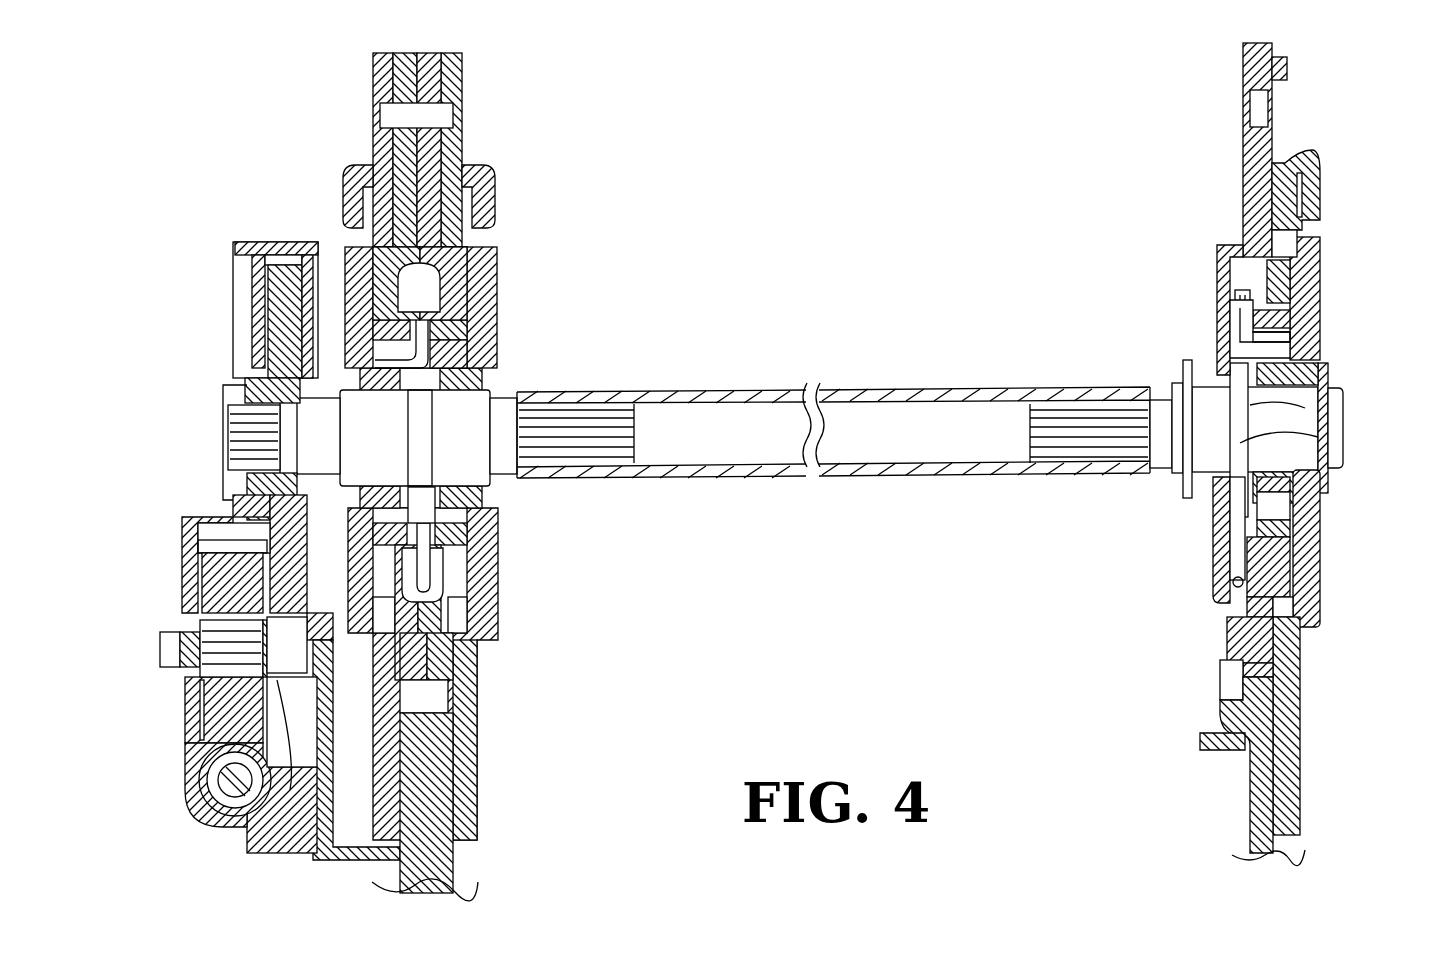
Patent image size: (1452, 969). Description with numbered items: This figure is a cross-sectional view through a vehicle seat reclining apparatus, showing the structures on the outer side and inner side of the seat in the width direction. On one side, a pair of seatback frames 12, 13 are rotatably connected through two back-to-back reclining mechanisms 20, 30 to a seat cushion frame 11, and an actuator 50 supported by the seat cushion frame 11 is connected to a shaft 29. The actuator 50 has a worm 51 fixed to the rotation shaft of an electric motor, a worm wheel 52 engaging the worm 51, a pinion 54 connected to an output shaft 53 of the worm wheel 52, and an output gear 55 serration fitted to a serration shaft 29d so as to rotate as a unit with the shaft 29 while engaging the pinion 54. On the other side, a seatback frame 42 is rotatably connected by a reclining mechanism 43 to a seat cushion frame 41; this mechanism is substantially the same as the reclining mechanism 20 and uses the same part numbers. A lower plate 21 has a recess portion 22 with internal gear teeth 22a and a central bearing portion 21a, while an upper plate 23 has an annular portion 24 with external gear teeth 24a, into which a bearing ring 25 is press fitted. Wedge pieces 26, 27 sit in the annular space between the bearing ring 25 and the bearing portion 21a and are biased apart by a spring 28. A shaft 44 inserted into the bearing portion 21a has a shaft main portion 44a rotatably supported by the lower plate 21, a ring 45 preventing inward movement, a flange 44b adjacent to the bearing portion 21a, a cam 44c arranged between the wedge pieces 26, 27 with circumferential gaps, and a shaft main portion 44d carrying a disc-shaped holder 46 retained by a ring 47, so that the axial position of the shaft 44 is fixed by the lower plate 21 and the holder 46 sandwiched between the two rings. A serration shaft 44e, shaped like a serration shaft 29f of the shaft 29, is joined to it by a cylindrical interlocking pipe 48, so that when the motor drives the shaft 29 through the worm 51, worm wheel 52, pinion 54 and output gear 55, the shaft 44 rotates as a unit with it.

The seat cushion frame 11 is at (463, 883).
The seatback frame 12 is at (372, 182).
The seatback frame 13 is at (492, 182).
The reclining mechanism 20 is at (328, 226).
The lower plate 21 is at (1318, 525).
The bearing portion 21a is at (1325, 392).
The recess portion 22 is at (1298, 634).
The internal gear teeth 22a is at (1228, 645).
The upper plate 23 is at (1252, 148).
The annular portion 24 is at (1305, 567).
The external gear teeth 24a is at (1298, 605).
The bearing ring 25 is at (1300, 322).
The wedge piece 26 is at (1292, 350).
The wedge piece 27 is at (1348, 338).
The spring 28 is at (1236, 300).
The shaft 29 is at (490, 380).
The serration shaft 29d is at (243, 432).
The serration shaft 29f is at (618, 415).
The reclining mechanism 30 is at (538, 251).
The seat cushion frame 41 is at (1258, 802).
The seatback frame 42 is at (1318, 157).
The reclining mechanism 43 is at (1356, 255).
The shaft 44 is at (1168, 415).
The shaft main portion 44a is at (1305, 408).
The flange 44b is at (1318, 437).
The cam 44c is at (1228, 514).
The shaft main portion 44d is at (1195, 440).
The serration shaft 44e is at (1066, 410).
The ring 45 is at (1335, 468).
The holder 46 is at (1228, 246).
The ring 47 is at (1188, 365).
The interlocking pipe 48 is at (870, 390).
The actuator 50 is at (161, 506).
The worm 51 is at (205, 790).
The worm wheel 52 is at (215, 710).
The output shaft 53 is at (180, 650).
The pinion 54 is at (290, 790).
The output gear 55 is at (290, 300).